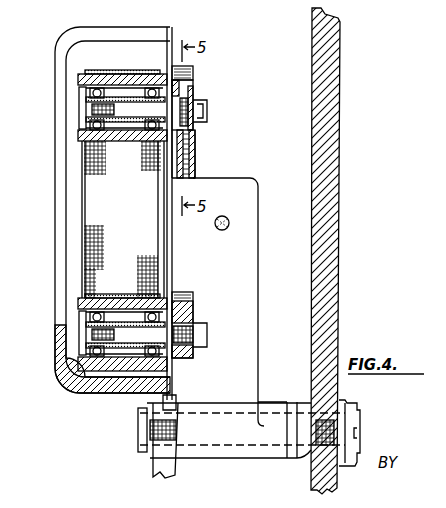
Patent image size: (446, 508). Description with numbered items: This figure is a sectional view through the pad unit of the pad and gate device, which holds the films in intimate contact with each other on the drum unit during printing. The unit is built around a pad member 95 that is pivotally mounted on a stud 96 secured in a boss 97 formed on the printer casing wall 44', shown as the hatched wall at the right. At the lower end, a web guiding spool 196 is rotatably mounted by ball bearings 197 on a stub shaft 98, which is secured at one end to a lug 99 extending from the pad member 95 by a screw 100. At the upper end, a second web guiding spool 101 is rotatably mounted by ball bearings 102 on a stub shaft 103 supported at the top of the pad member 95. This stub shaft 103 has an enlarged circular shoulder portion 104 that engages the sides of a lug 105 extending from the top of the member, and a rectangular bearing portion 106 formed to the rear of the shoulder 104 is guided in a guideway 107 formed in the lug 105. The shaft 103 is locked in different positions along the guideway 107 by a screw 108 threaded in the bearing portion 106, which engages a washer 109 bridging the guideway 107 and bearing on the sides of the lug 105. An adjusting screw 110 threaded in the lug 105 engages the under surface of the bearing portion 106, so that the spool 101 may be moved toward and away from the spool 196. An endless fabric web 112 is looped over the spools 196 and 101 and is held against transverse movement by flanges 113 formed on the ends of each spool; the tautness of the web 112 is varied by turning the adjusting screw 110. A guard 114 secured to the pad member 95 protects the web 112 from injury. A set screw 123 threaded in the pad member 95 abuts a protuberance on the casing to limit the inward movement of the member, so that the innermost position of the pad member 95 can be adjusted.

The printer casing wall 44' is at (341, 251).
The guard 114 is at (55, 264).
The flanges 113 is at (98, 70).
The second web guiding spool 101 is at (131, 72).
The stub shaft 103 is at (85, 116).
The ball bearings 102 is at (138, 148).
The endless fabric web 112 is at (146, 233).
The web guiding spool 196 is at (124, 300).
The stub shaft 98 is at (85, 347).
The ball bearings 197 is at (127, 378).
The guideway 107 is at (193, 68).
The enlarged circular shoulder portion 104 is at (182, 90).
The rectangular bearing portion 106 is at (180, 97).
The screw 108 is at (208, 112).
The washer 109 is at (200, 130).
The adjusting screw 110 is at (196, 146).
The lug 105 is at (195, 165).
The lug 99 is at (193, 312).
The screw 100 is at (205, 332).
The set screw 123 is at (232, 208).
The pad member 95 is at (245, 240).
The stud 96 is at (228, 430).
The boss 97 is at (298, 405).